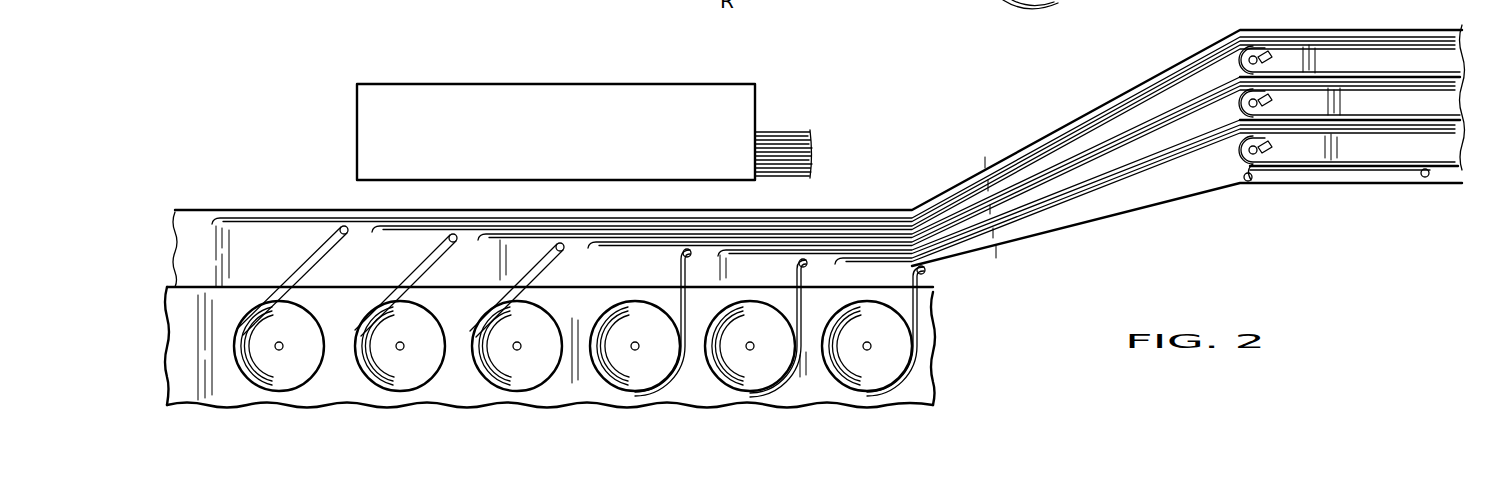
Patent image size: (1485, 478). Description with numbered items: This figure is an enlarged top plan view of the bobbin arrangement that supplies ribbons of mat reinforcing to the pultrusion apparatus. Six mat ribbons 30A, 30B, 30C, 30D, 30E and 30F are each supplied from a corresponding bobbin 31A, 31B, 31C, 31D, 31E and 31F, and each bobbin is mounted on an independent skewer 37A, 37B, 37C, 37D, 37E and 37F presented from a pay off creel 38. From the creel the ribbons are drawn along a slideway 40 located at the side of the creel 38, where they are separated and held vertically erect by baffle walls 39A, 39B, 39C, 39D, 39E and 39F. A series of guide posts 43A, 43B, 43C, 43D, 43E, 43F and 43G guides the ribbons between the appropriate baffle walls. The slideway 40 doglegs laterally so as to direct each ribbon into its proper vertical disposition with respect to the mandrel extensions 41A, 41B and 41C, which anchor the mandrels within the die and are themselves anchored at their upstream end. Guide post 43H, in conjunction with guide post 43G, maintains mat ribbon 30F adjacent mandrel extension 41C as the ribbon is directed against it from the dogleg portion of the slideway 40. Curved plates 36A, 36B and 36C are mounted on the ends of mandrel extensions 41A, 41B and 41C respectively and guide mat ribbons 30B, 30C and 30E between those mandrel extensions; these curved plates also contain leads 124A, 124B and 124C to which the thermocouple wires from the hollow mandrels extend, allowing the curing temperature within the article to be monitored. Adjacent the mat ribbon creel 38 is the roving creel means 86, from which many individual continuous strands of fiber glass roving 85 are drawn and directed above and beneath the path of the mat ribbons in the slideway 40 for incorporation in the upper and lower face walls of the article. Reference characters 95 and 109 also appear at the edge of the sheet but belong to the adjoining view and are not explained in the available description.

The mat ribbon 30A is at (308, 262).
The mat ribbon 30B is at (388, 284).
The mat ribbon 30C is at (504, 288).
The mat ribbon 30D is at (680, 277).
The mat ribbon 30E is at (797, 294).
The mat ribbon 30F is at (923, 320).
The bobbin 31A is at (284, 368).
The bobbin 31B is at (405, 368).
The bobbin 31C is at (522, 368).
The bobbin 31D is at (642, 366).
The bobbin 31E is at (758, 366).
The bobbin 31F is at (875, 366).
The curved plate 36A is at (1241, 66).
The curved plate 36B is at (1243, 108).
The curved plate 36C is at (1262, 164).
The skewer 37A is at (276, 344).
The skewer 37B is at (397, 344).
The skewer 37C is at (514, 344).
The skewer 37D is at (632, 342).
The skewer 37E is at (747, 342).
The skewer 37F is at (864, 342).
The pay off creel 38 is at (172, 345).
The baffle wall 39A is at (283, 210).
The baffle wall 39B is at (436, 225).
The baffle wall 39C is at (530, 233).
The baffle wall 39D is at (641, 240).
The baffle wall 39E is at (739, 252).
The baffle wall 39F is at (867, 262).
The slideway 40 is at (178, 228).
The mandrel extension 41A is at (1350, 61).
The mandrel extension 41B is at (1350, 104).
The mandrel extension 41C is at (1383, 153).
The guide post 43A is at (347, 234).
The guide post 43B is at (453, 242).
The guide post 43C is at (563, 251).
The guide post 43D is at (692, 255).
The guide post 43E is at (806, 268).
The guide post 43F is at (925, 272).
The guide post 43G is at (1246, 180).
The guide post 43H is at (1425, 177).
The fiber glass roving strands 85 is at (805, 142).
The roving creel means 86 is at (365, 100).
The element 95 is at (638, 0).
The element 109 is at (1050, 0).
The lead 124A is at (1257, 55).
The lead 124B is at (1249, 101).
The lead 124C is at (1262, 153).